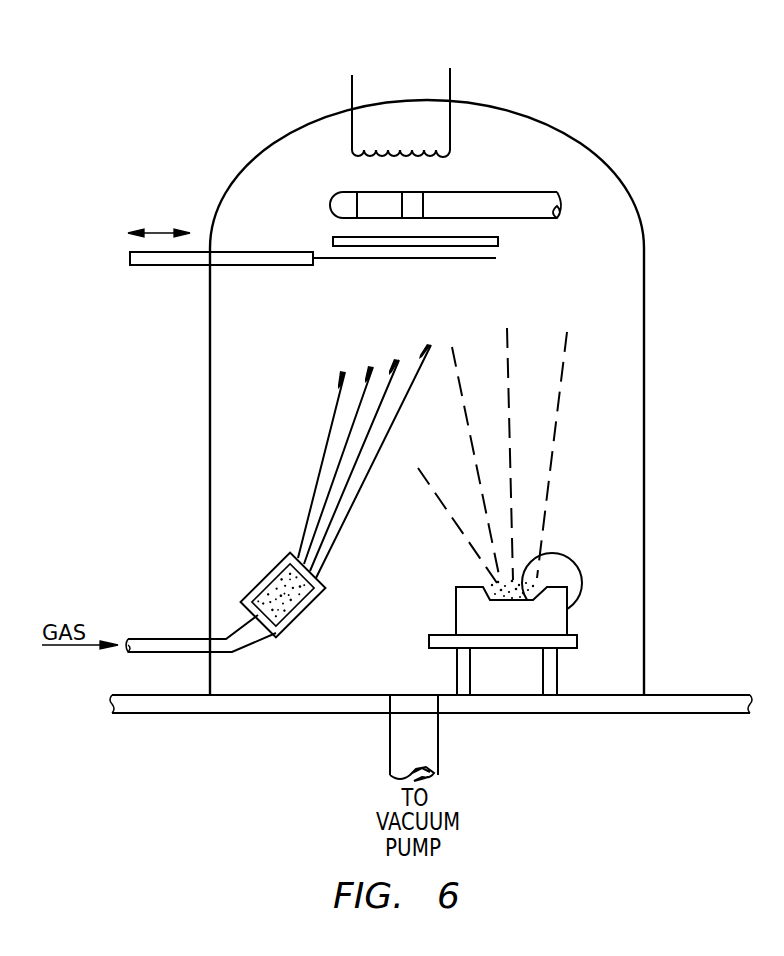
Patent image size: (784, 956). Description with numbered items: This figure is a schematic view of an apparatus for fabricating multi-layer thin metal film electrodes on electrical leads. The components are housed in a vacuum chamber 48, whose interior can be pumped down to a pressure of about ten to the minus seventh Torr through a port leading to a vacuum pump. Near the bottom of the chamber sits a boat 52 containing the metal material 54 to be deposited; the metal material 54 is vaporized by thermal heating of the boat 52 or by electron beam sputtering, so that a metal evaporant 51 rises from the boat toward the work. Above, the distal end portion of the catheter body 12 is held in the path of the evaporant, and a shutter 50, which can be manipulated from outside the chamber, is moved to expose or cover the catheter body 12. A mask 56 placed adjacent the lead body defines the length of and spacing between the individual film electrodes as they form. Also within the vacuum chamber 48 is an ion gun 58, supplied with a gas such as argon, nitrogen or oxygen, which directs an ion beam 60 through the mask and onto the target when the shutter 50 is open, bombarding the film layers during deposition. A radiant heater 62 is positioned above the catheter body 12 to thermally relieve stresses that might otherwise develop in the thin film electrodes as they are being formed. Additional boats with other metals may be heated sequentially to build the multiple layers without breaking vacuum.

The catheter body 12 is at (528, 190).
The vacuum chamber 48 is at (644, 247).
The shutter 50 is at (182, 266).
The metal evaporant 51 is at (548, 387).
The boat 52 is at (455, 600).
The metal material 54 is at (532, 582).
The mask 56 is at (332, 240).
The ion gun 58 is at (272, 573).
The ion beam 60 is at (348, 404).
The radiant heater 62 is at (402, 156).